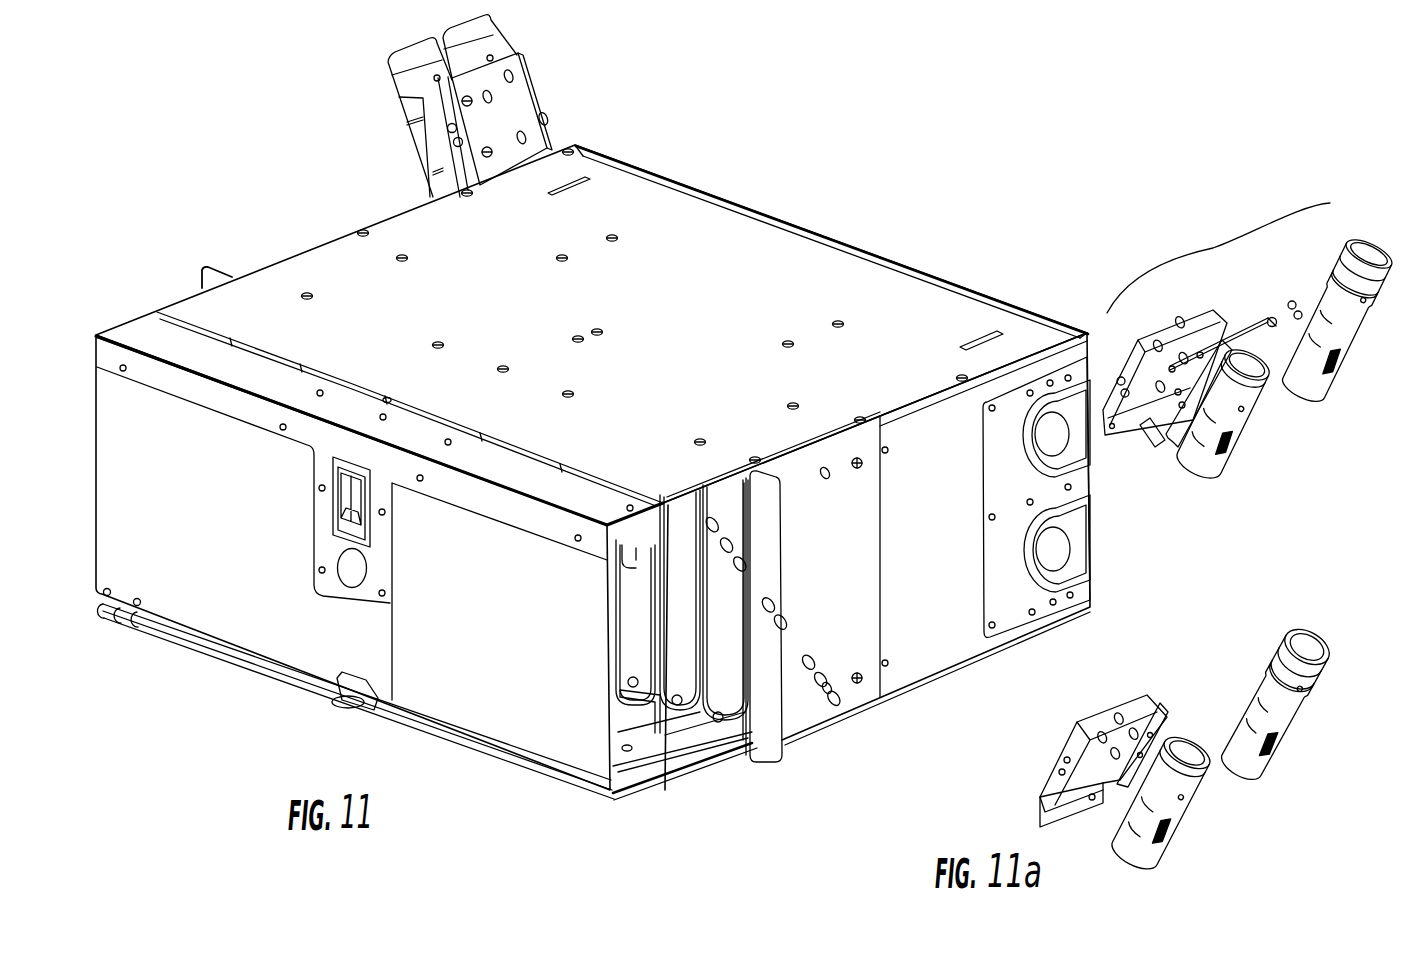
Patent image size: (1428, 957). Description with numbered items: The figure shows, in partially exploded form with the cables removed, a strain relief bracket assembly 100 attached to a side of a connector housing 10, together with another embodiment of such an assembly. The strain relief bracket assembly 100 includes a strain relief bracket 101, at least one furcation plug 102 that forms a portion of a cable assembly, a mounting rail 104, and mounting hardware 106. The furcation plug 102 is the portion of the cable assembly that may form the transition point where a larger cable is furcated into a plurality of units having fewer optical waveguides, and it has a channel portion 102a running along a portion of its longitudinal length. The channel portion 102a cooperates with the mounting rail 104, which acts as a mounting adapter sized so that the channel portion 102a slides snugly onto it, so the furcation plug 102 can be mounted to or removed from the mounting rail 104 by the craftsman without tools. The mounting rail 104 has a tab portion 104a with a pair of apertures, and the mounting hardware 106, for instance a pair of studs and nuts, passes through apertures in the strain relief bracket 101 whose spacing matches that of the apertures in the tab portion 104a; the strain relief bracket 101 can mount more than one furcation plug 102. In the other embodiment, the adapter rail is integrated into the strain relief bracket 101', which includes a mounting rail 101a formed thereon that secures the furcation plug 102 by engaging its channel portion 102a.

In FIG. 11, the connector housing 10 is at (278, 295).
In FIG. 11, the strain relief bracket assembly 100 is at (519, 105).
In FIG. 11A, the strain relief bracket assembly 100 is at (1213, 248).
In FIG. 11A, the strain relief bracket 101 is at (1171, 352).
In FIG. 11A, the strain relief bracket 101' is at (1061, 761).
In FIG. 11A, the mounting rail 101a is at (1040, 797).
In FIG. 11A, the furcation plug 102 is at (1240, 423).
In FIG. 11A, the channel portion 102a is at (1320, 233).
In FIG. 11A, the mounting rail 104 is at (1157, 410).
In FIG. 11A, the tab portion 104a is at (1143, 420).
In FIG. 11A, the mounting hardware 106 is at (1232, 348).